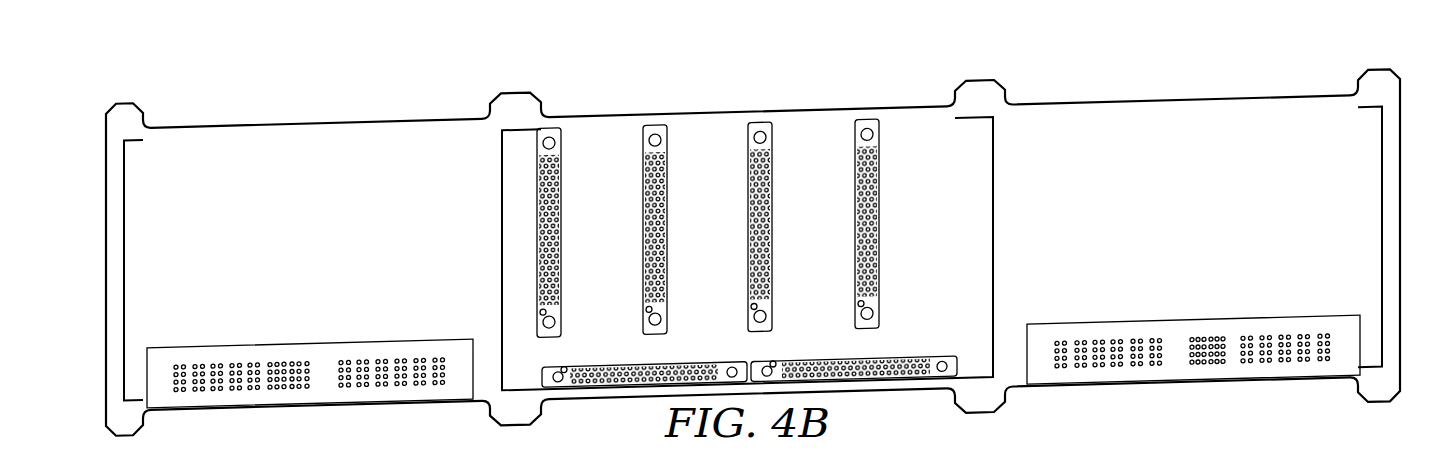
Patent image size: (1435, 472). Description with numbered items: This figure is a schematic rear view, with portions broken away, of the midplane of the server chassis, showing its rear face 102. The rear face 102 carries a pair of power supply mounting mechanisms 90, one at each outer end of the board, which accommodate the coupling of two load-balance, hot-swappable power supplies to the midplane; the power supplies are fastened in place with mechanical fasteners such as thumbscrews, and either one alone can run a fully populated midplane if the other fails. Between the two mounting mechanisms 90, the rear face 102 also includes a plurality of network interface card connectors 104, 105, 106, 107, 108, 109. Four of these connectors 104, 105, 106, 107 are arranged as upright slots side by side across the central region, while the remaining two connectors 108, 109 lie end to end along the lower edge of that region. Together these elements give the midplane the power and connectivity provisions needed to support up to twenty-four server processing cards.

The power supply mounting mechanism 90 is at (311, 346).
The rear face 102 is at (331, 250).
The network interface card connector 104 is at (563, 233).
The network interface card connector 105 is at (669, 232).
The network interface card connector 106 is at (773, 228).
The network interface card connector 107 is at (880, 226).
The network interface card connector 108 is at (726, 368).
The network interface card connector 109 is at (934, 361).